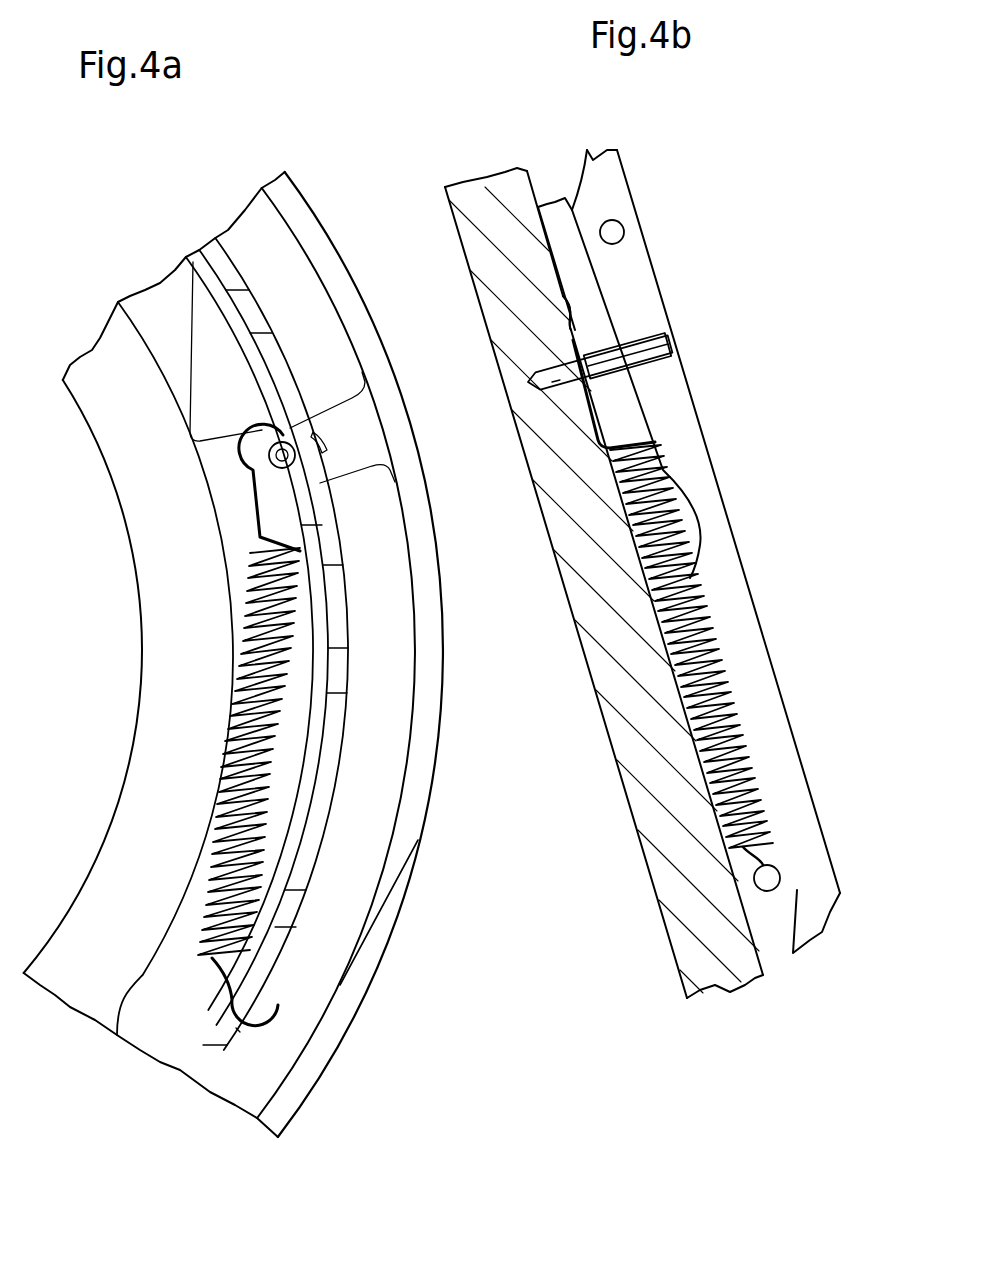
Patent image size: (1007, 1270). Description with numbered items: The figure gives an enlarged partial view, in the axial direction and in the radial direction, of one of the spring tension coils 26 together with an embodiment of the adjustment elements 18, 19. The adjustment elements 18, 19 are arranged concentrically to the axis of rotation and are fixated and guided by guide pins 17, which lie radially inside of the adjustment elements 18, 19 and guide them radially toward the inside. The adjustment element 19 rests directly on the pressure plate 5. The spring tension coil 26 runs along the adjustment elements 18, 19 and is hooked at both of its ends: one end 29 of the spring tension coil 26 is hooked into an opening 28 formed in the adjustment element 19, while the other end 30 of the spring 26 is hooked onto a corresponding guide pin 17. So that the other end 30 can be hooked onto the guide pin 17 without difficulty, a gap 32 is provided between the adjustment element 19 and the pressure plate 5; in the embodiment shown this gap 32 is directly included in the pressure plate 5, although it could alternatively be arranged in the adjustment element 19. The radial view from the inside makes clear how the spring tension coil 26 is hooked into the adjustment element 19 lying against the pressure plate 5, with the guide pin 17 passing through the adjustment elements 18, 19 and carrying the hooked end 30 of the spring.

In FIG. 4A, the pressure plate 5 is at (103, 430).
In FIG. 4B, the pressure plate 5 is at (520, 185).
In FIG. 4A, the guide pin 17 is at (295, 458).
In FIG. 4B, the guide pin 17 is at (672, 352).
In FIG. 4A, the adjustment element 18 is at (323, 838).
In FIG. 4B, the adjustment element 18 is at (636, 252).
In FIG. 4A, the adjustment element 19 is at (405, 638).
In FIG. 4B, the adjustment element 19 is at (598, 305).
In FIG. 4A, the spring tension coil 26 is at (227, 748).
In FIG. 4B, the spring tension coil 26 is at (703, 595).
In FIG. 4A, the opening 28 is at (235, 1030).
In FIG. 4B, the opening 28 is at (770, 878).
In FIG. 4A, the end of the spring tension coil 29 is at (290, 1007).
In FIG. 4A, the other end of the spring 30 is at (330, 440).
In FIG. 4B, the other end of the spring 30 is at (665, 335).
In FIG. 4B, the gap 32 is at (560, 318).